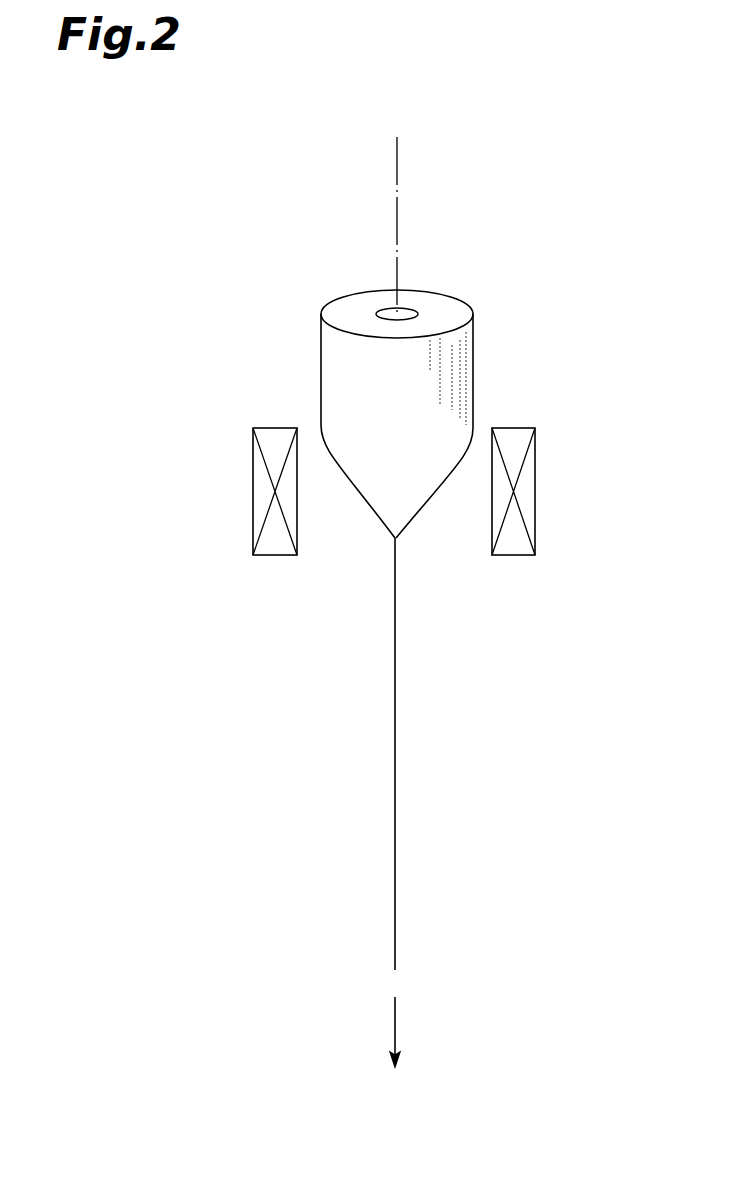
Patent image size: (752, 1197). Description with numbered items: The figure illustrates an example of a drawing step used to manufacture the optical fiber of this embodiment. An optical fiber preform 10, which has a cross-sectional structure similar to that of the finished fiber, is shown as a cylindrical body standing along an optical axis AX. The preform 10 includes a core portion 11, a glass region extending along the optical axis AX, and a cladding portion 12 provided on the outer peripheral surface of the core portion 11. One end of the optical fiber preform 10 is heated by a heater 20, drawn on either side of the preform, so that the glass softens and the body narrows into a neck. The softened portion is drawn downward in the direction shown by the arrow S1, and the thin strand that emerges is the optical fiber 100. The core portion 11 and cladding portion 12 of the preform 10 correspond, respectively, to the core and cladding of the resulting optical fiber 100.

The optical fiber preform 10 is at (476, 351).
The core portion 11 is at (388, 308).
The cladding portion 12 is at (437, 300).
The heater 20 is at (535, 500).
The optical fiber 100 is at (397, 833).
The optical axis AX is at (394, 210).
The drawing direction arrow S1 is at (397, 1028).